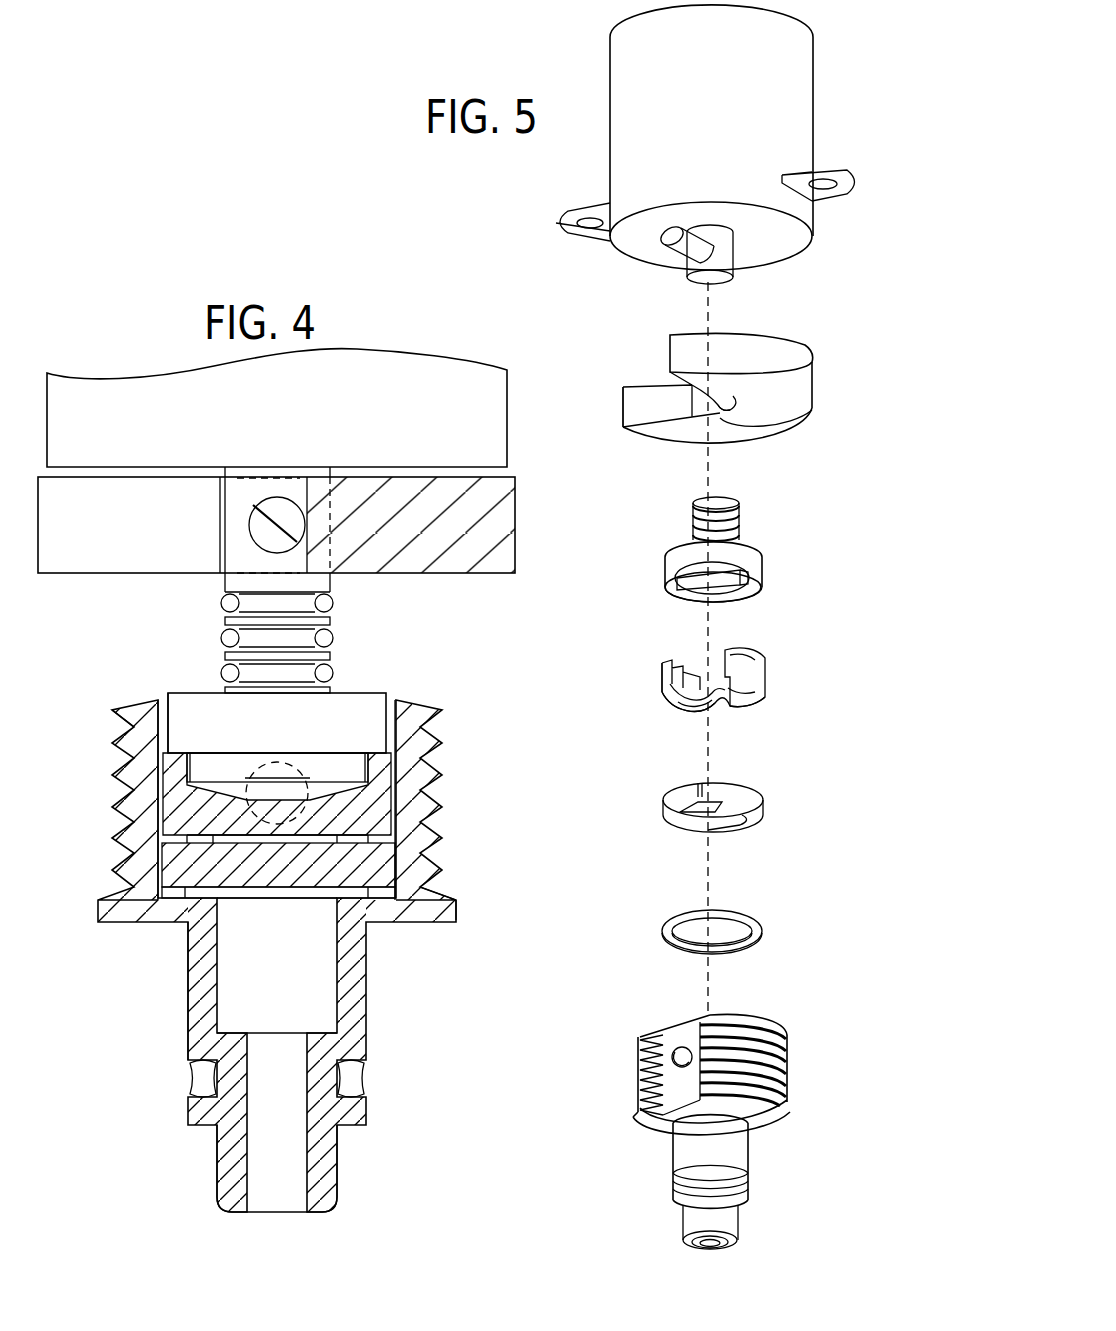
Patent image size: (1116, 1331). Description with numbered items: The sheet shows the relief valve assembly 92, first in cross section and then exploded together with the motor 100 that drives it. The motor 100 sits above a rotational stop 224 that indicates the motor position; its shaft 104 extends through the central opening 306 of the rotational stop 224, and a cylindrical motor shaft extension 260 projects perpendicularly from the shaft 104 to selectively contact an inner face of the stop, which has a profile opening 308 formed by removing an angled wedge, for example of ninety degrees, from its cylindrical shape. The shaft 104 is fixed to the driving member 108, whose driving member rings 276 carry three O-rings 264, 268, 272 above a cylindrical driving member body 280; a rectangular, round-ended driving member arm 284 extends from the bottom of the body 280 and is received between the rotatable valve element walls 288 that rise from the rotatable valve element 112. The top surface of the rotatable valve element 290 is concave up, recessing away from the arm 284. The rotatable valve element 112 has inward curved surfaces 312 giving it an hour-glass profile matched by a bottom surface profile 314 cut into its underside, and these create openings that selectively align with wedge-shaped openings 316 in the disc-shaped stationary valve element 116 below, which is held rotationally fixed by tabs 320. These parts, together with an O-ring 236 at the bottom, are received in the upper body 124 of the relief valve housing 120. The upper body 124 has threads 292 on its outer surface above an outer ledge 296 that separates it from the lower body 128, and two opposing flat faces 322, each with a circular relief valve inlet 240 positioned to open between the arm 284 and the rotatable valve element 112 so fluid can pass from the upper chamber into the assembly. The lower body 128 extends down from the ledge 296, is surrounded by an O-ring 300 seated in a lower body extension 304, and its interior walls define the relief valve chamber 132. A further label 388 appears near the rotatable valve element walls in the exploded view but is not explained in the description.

In FIG. 4, the relief valve assembly 92 is at (90, 710).
In FIG. 5, the relief valve assembly 92 is at (870, 538).
In FIG. 4, the motor 100 is at (95, 405).
In FIG. 5, the motor 100 is at (763, 77).
In FIG. 4, the shaft 104 is at (237, 582).
In FIG. 5, the shaft 104 is at (720, 258).
In FIG. 4, the driving member 108 is at (368, 697).
In FIG. 5, the driving member 108 is at (772, 512).
In FIG. 4, the rotatable valve element 112 is at (320, 813).
In FIG. 5, the rotatable valve element 112 is at (758, 683).
In FIG. 4, the stationary valve element 116 is at (365, 870).
In FIG. 5, the stationary valve element 116 is at (755, 797).
In FIG. 4, the relief valve housing 120 is at (145, 958).
In FIG. 5, the relief valve housing 120 is at (820, 1080).
In FIG. 4, the upper body 124 is at (128, 867).
In FIG. 5, the upper body 124 is at (778, 1032).
In FIG. 4, the lower body 128 is at (200, 985).
In FIG. 5, the lower body 128 is at (683, 1158).
In FIG. 4, the chamber 132 is at (296, 989).
In FIG. 4, the rotational stop 224 is at (127, 555).
In FIG. 5, the rotational stop 224 is at (803, 386).
In FIG. 5, the O-ring 236 is at (760, 933).
In FIG. 4, the relief valve inlet 240 is at (258, 775).
In FIG. 5, the relief valve inlet 240 is at (680, 1050).
In FIG. 4, the motor shaft extension 260 is at (287, 512).
In FIG. 5, the motor shaft extension 260 is at (688, 245).
In FIG. 4, the O-ring 264 is at (332, 605).
In FIG. 5, the O-ring 264 is at (740, 503).
In FIG. 4, the O-ring 268 is at (332, 640).
In FIG. 5, the O-ring 268 is at (690, 518).
In FIG. 4, the O-ring 272 is at (333, 673).
In FIG. 5, the O-ring 272 is at (690, 535).
In FIG. 4, the driving member rings 276 is at (220, 673).
In FIG. 4, the driving member body 280 is at (183, 735).
In FIG. 5, the driving member body 280 is at (752, 557).
In FIG. 4, the driving member arm 284 is at (352, 773).
In FIG. 5, the driving member arm 284 is at (722, 590).
In FIG. 4, the rotatable valve element walls 288 is at (176, 795).
In FIG. 5, the rotatable valve element walls 288 is at (752, 652).
In FIG. 4, the top surface of the rotatable valve element 290 is at (205, 825).
In FIG. 4, the threads 292 is at (433, 882).
In FIG. 4, the outer ledge 296 is at (450, 918).
In FIG. 4, the O-ring 300 is at (355, 1083).
In FIG. 5, the O-ring 300 is at (745, 1190).
In FIG. 4, the lower body extension 304 is at (358, 1122).
In FIG. 5, the lower body extension 304 is at (745, 1205).
In FIG. 5, the central opening 306 is at (722, 418).
In FIG. 5, the profile opening 308 is at (641, 377).
In FIG. 5, the inward curved surfaces 312 is at (723, 707).
In FIG. 5, the bottom surface profile 314 is at (735, 695).
In FIG. 5, the openings 316 is at (735, 828).
In FIG. 5, the tabs 320 is at (688, 790).
In FIG. 5, the flat faces 322 is at (678, 1095).
In FIG. 5, the clip arm 388 is at (670, 673).